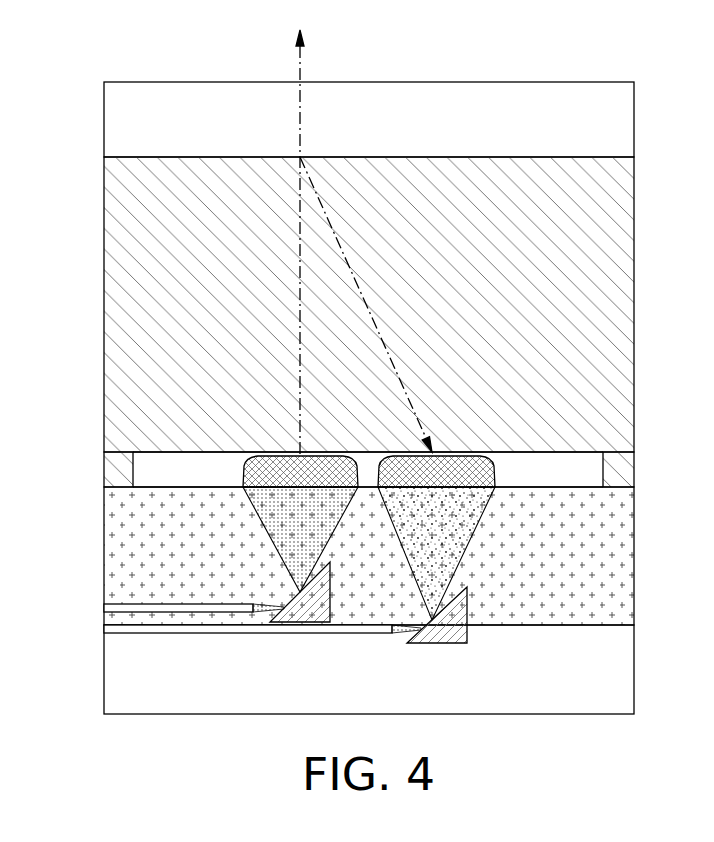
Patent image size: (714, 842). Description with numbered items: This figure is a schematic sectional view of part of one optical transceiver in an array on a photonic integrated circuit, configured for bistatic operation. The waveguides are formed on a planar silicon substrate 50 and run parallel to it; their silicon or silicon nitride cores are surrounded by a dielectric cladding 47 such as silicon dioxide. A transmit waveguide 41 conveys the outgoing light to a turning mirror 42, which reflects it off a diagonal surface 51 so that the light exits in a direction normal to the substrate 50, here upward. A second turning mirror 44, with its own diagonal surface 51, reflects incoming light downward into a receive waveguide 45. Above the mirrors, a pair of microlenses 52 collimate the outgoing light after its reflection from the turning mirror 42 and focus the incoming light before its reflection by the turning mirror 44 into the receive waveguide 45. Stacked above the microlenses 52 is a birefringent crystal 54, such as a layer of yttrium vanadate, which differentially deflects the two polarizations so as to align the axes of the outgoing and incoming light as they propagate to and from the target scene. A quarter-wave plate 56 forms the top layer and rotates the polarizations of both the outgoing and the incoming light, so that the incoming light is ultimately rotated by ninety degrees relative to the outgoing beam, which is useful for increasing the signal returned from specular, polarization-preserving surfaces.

The transmit waveguide 41 is at (121, 608).
The turning mirror 42 is at (300, 610).
The turning mirror 44 is at (436, 640).
The receive waveguide 45 is at (348, 628).
The dielectric cladding 47 is at (628, 562).
The planar silicon substrate 50 is at (105, 692).
The diagonal surface 51 is at (291, 602).
The microlenses 52 is at (263, 468).
The birefringent crystal 54 is at (121, 327).
The quarter-wave plate 56 is at (121, 128).